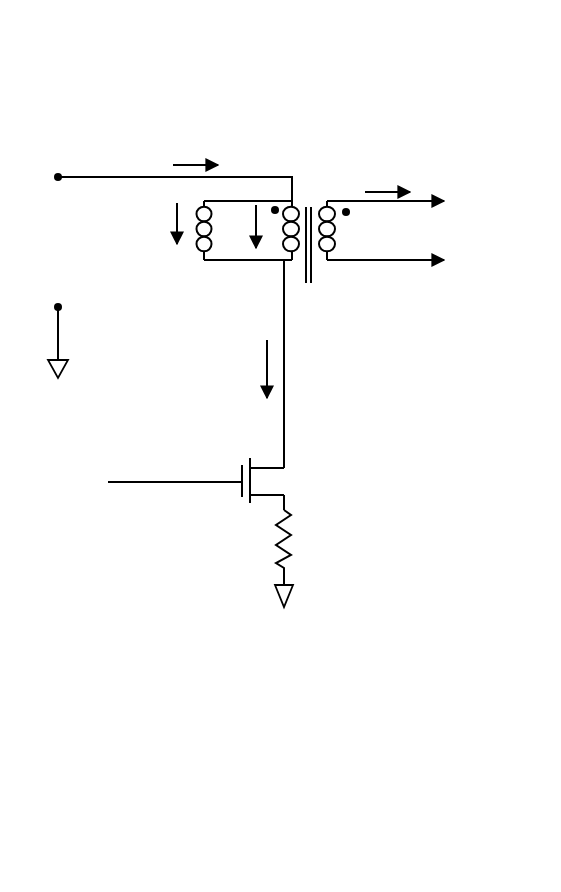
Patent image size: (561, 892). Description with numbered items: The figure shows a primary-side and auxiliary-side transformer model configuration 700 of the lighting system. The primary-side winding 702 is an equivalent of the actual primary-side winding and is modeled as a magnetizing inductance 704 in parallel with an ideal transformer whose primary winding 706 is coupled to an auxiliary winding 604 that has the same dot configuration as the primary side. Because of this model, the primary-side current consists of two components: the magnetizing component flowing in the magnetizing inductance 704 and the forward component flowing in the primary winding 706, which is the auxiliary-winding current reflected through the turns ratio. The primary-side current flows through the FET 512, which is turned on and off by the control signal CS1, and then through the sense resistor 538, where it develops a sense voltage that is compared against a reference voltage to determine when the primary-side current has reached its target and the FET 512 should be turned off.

The primary-side and auxiliary-side transformer model configuration 700 is at (460, 122).
The primary-side winding 702 is at (216, 302).
The magnetizing inductance 704 is at (200, 262).
The primary winding 706 is at (295, 207).
The auxiliary winding 604 is at (330, 258).
The FET 512 is at (250, 499).
The sense resistor 538 is at (292, 538).